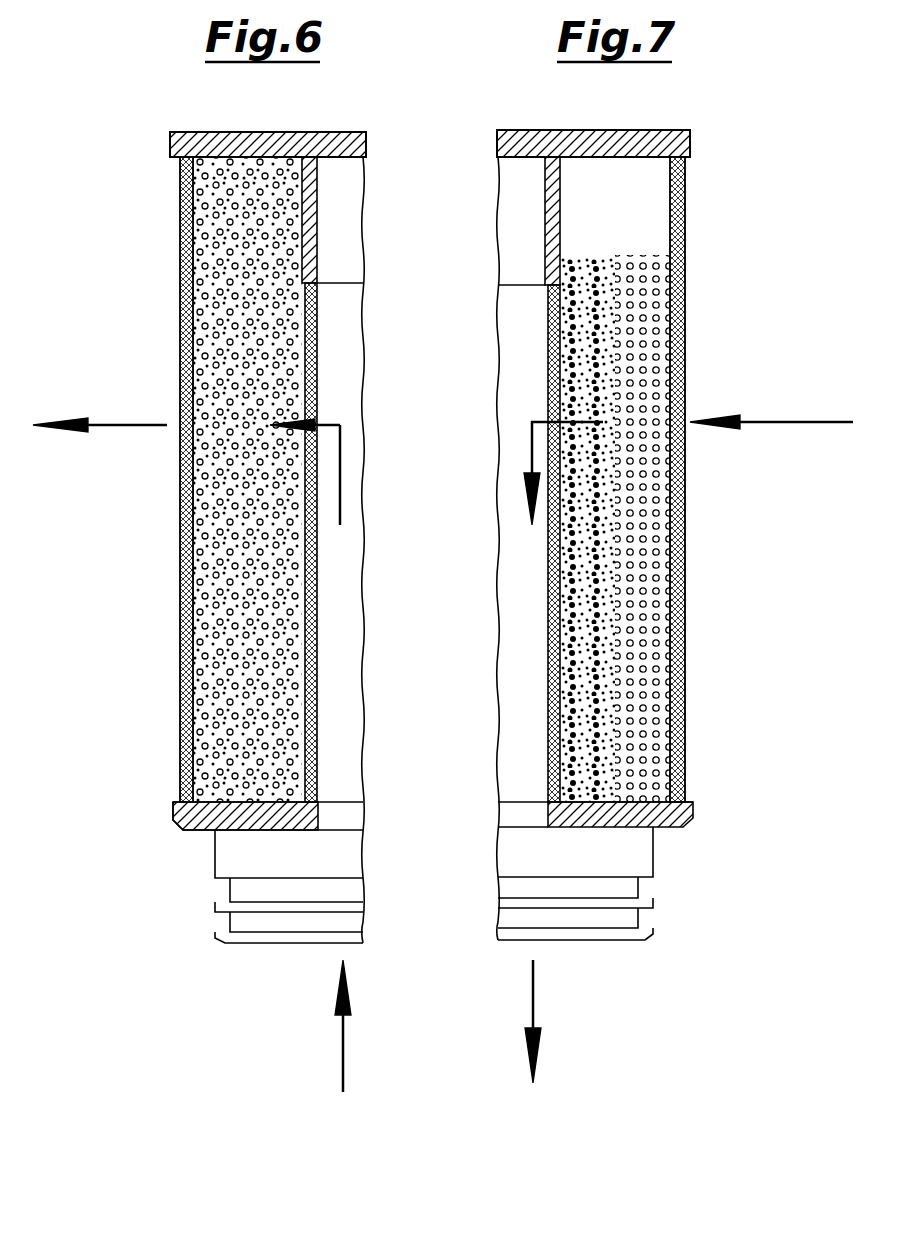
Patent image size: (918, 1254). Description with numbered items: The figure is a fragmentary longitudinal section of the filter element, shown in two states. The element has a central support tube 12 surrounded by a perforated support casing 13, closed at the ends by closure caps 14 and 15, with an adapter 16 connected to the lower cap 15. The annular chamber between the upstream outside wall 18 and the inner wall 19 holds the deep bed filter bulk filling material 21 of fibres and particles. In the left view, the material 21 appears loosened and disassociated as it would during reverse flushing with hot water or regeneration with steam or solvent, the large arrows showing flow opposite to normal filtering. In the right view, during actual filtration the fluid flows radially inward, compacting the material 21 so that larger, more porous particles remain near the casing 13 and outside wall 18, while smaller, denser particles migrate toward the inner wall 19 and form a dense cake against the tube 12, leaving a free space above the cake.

In FIG. 6, the support tube 12 is at (317, 210).
In FIG. 7, the support tube 12 is at (545, 212).
In FIG. 6, the perforated support casing 13 is at (183, 262).
In FIG. 7, the perforated support casing 13 is at (685, 215).
In FIG. 6, the closure cap 14 is at (197, 147).
In FIG. 7, the closure cap 14 is at (690, 137).
In FIG. 6, the closure cap 15 is at (178, 815).
In FIG. 7, the closure cap 15 is at (693, 810).
In FIG. 6, the adapter 16 is at (210, 858).
In FIG. 7, the adapter 16 is at (627, 855).
In FIG. 6, the outside wall 18 is at (185, 325).
In FIG. 7, the outside wall 18 is at (685, 305).
In FIG. 6, the inner wall 19 is at (317, 330).
In FIG. 7, the inner wall 19 is at (548, 365).
In FIG. 6, the deep bed filter bulk filling material 21 is at (225, 525).
In FIG. 7, the deep bed filter bulk filling material 21 is at (625, 482).